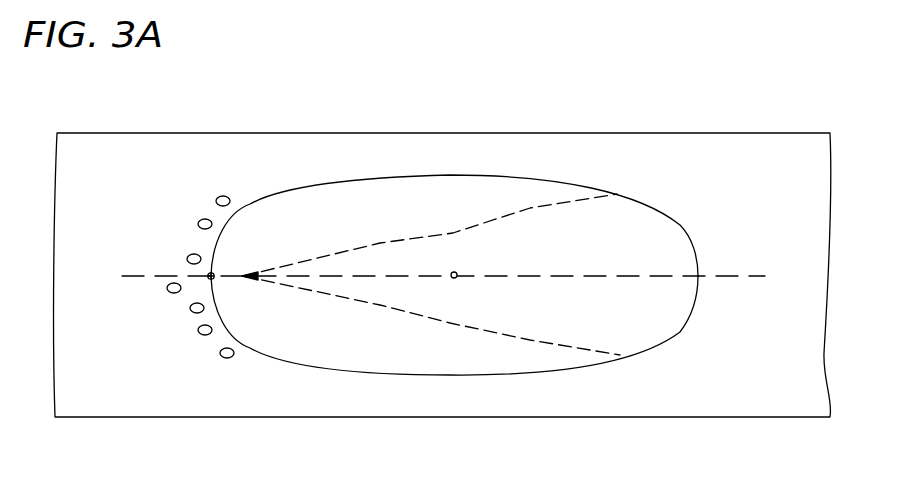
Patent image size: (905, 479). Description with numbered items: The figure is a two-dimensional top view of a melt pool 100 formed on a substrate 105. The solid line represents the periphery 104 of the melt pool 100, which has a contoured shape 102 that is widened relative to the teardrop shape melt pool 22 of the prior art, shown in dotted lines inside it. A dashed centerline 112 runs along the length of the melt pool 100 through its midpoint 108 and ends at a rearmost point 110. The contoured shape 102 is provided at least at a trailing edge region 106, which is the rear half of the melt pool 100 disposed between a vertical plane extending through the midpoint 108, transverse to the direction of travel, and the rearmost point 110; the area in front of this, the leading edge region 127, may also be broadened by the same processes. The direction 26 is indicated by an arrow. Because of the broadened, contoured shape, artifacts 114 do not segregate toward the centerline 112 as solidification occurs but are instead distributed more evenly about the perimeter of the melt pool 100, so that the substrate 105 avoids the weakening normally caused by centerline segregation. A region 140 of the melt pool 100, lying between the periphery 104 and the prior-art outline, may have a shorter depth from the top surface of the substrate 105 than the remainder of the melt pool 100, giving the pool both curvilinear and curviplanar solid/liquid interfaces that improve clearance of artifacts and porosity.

The teardrop shape melt pool 22 is at (453, 233).
The flow direction 26 is at (577, 308).
The melt pool 100 is at (447, 279).
The contoured shape 102 is at (307, 362).
The periphery 104 is at (280, 195).
The substrate 105 is at (725, 162).
The trailing edge region 106 is at (312, 173).
The midpoint 108 is at (456, 279).
The rearmost point 110 is at (211, 276).
The centerline 112 is at (568, 275).
The artifacts 114 is at (221, 358).
The leading edge region 127 is at (588, 186).
The region 140 is at (350, 213).